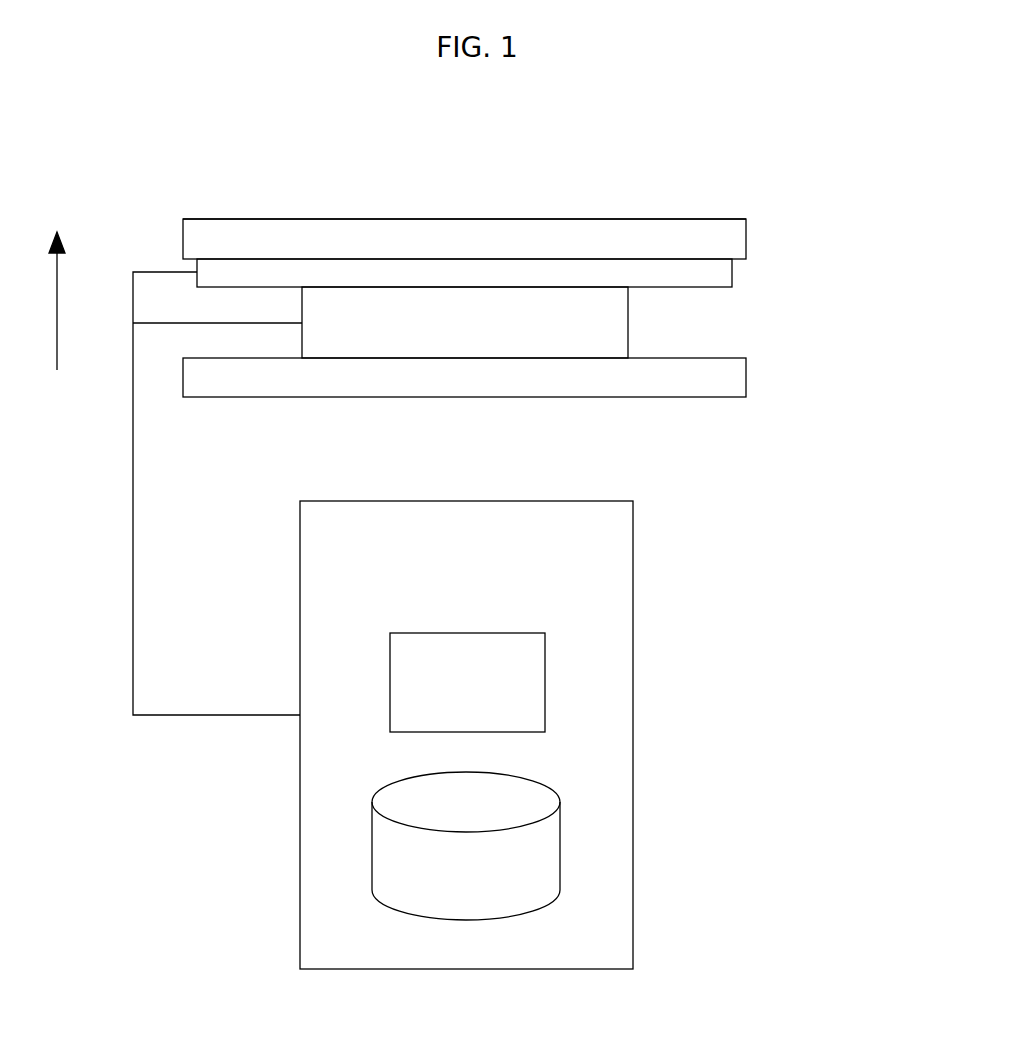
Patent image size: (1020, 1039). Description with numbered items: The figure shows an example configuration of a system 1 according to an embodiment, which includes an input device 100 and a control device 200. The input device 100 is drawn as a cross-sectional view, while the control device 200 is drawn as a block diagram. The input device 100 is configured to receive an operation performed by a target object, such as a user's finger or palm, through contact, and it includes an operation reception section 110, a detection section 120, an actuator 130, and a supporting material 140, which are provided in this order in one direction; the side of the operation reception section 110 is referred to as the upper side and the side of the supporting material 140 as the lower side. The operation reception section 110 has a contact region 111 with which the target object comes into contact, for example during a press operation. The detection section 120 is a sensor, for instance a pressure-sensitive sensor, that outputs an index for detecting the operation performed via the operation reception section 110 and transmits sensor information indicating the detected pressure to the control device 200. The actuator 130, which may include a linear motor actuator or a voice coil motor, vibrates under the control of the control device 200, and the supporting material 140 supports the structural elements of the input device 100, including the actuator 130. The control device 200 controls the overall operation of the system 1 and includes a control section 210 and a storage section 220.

The system 1 is at (848, 160).
The input device 100 is at (867, 220).
The operation reception section 110 is at (746, 240).
The contact region 111 is at (670, 218).
The detection section 120 is at (732, 277).
The actuator 130 is at (628, 327).
The supporting material 140 is at (746, 378).
The control device 200 is at (633, 532).
The control section 210 is at (518, 633).
The storage section 220 is at (525, 778).